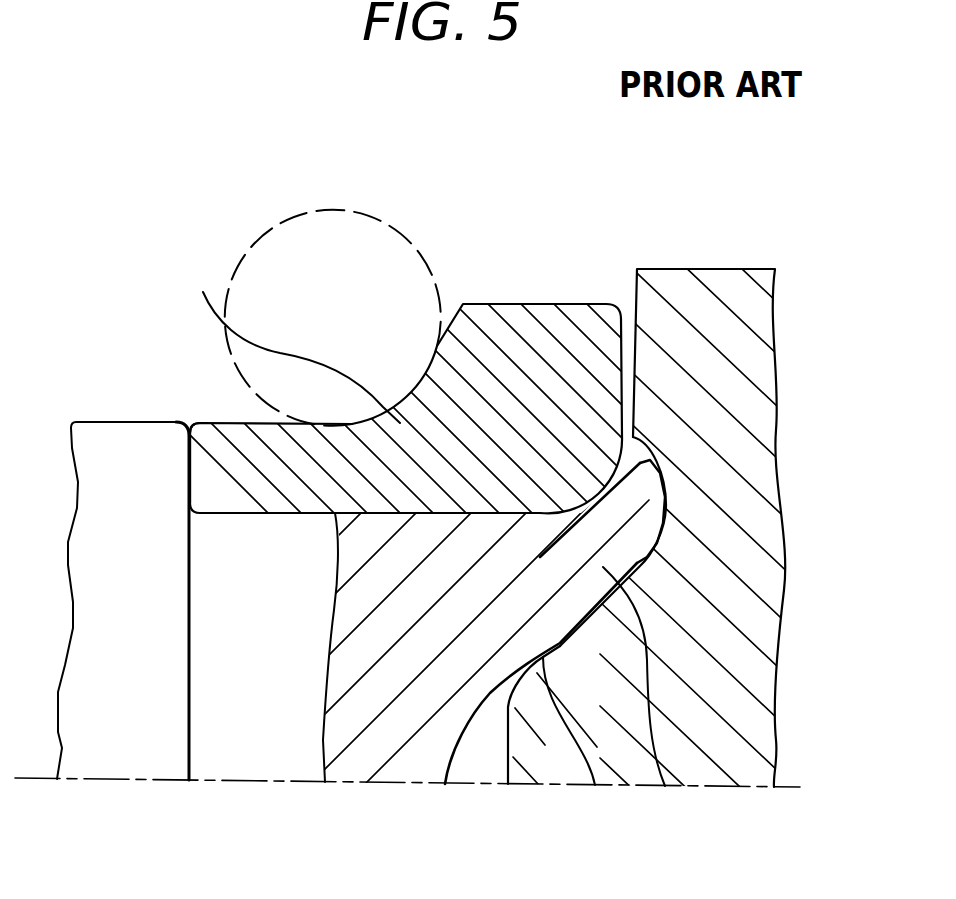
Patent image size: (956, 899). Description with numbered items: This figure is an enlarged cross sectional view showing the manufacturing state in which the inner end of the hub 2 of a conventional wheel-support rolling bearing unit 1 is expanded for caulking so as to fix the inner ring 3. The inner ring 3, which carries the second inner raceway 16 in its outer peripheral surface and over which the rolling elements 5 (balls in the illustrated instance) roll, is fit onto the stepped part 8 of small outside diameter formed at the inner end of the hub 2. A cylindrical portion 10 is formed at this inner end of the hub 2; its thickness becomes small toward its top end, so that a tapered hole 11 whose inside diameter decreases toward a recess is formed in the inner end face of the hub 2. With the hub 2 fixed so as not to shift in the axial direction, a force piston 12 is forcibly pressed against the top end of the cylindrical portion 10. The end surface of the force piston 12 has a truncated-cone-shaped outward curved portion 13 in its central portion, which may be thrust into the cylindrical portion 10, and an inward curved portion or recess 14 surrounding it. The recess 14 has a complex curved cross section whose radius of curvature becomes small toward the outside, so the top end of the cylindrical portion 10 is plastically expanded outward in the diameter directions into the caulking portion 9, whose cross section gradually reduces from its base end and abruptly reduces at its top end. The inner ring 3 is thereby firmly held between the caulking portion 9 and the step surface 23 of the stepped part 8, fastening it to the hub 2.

The wheel-support rolling bearing unit 1 is at (445, 346).
The hub 2 is at (125, 745).
The inner ring 3 is at (527, 325).
The rolling elements 5 is at (273, 240).
The stepped part 8 is at (427, 643).
The caulking portion 9 is at (660, 458).
The cylindrical portion 10 is at (665, 786).
The tapered hole 11 is at (595, 785).
The force piston 12 is at (677, 490).
The outward curved portion 13 is at (530, 747).
The recess 14 is at (652, 519).
The second inner raceway 16 is at (293, 341).
The step surface 23 is at (202, 437).